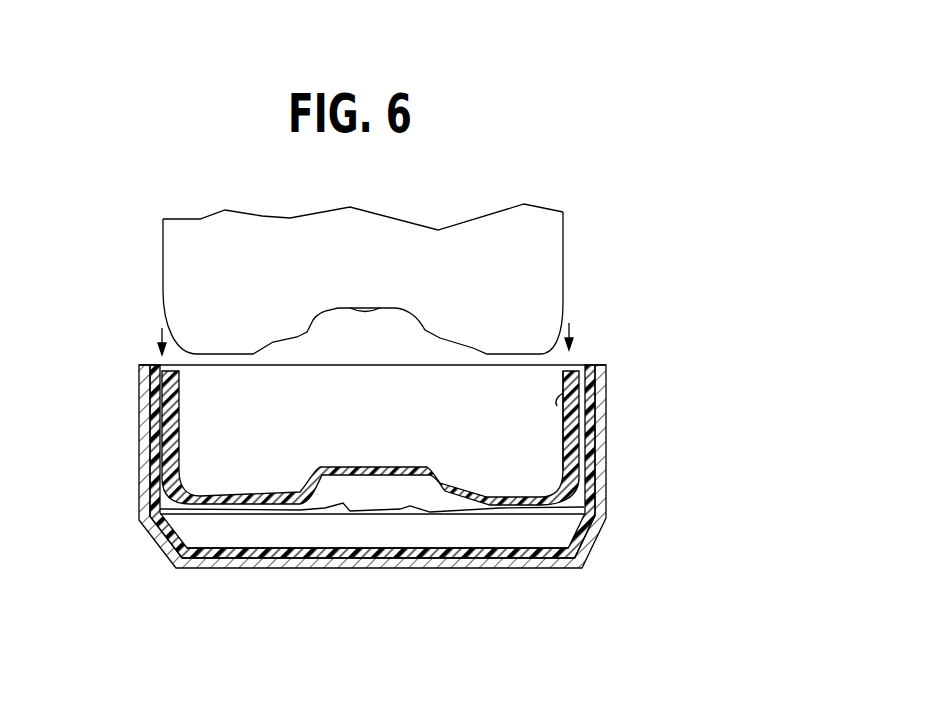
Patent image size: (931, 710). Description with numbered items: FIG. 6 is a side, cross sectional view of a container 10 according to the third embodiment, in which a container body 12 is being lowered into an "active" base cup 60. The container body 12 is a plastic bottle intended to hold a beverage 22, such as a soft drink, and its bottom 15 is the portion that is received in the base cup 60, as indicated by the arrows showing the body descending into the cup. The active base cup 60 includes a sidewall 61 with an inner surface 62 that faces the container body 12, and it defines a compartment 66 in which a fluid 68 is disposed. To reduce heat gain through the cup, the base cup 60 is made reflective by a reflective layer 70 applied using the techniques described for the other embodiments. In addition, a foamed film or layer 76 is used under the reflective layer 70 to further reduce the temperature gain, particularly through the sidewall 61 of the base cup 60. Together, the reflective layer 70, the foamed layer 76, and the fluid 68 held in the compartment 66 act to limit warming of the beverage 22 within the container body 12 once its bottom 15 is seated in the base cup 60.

The container 10 is at (828, 220).
The container body 12 is at (565, 282).
The bottom 15 is at (388, 314).
The beverage 22 is at (533, 233).
The active base cup 60 is at (128, 492).
The sidewall 61 is at (163, 447).
The inner surface 62 is at (563, 393).
The compartment 66 is at (570, 493).
The fluid 68 is at (260, 537).
The reflective layer 70 is at (138, 440).
The foamed layer 76 is at (170, 563).